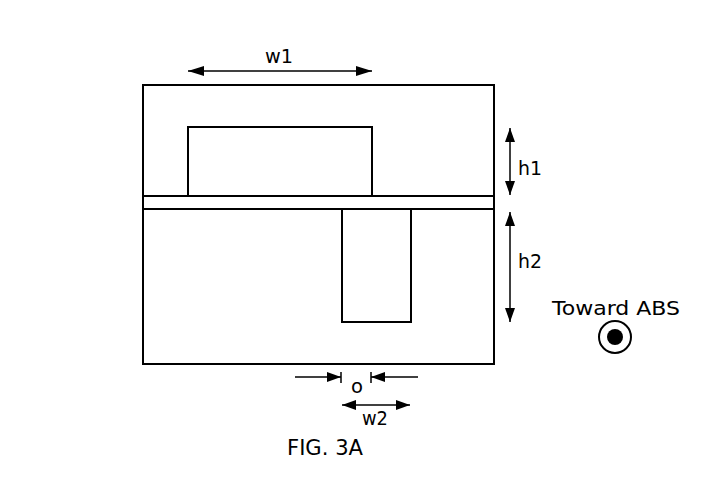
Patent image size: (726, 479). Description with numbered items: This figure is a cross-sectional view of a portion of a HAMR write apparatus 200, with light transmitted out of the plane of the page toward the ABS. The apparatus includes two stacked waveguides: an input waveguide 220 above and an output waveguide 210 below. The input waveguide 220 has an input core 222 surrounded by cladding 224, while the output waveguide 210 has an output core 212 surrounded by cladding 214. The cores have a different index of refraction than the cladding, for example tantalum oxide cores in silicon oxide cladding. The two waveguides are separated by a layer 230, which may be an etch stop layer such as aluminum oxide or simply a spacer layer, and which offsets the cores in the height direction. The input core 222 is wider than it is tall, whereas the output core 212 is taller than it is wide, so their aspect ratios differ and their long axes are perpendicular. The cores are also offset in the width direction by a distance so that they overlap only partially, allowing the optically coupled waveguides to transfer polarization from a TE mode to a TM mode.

The HAMR write apparatus 200 is at (345, 40).
The output waveguide 210 is at (248, 286).
The output core 212 is at (376, 265).
The cladding 214 is at (318, 347).
The input waveguide 220 is at (263, 140).
The input core 222 is at (280, 161).
The cladding 224 is at (318, 101).
The layer 230 is at (143, 203).